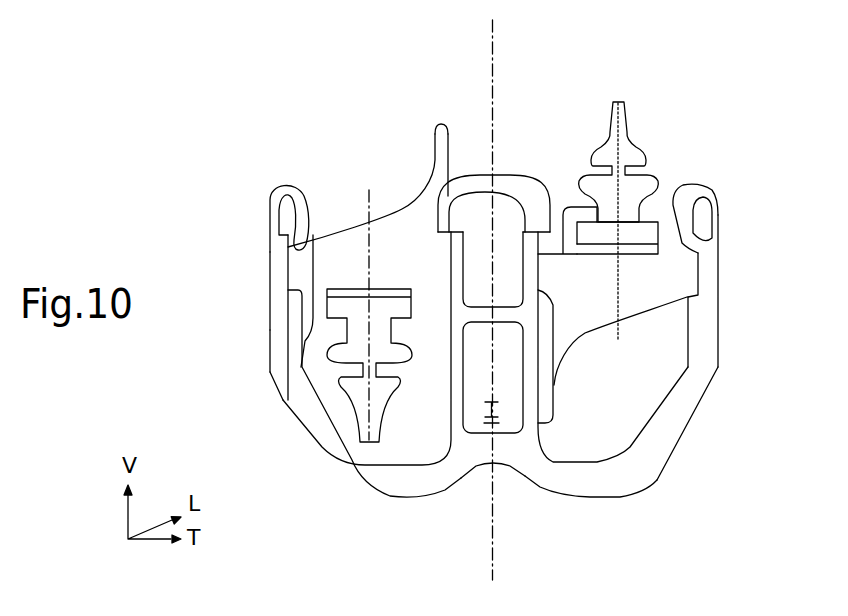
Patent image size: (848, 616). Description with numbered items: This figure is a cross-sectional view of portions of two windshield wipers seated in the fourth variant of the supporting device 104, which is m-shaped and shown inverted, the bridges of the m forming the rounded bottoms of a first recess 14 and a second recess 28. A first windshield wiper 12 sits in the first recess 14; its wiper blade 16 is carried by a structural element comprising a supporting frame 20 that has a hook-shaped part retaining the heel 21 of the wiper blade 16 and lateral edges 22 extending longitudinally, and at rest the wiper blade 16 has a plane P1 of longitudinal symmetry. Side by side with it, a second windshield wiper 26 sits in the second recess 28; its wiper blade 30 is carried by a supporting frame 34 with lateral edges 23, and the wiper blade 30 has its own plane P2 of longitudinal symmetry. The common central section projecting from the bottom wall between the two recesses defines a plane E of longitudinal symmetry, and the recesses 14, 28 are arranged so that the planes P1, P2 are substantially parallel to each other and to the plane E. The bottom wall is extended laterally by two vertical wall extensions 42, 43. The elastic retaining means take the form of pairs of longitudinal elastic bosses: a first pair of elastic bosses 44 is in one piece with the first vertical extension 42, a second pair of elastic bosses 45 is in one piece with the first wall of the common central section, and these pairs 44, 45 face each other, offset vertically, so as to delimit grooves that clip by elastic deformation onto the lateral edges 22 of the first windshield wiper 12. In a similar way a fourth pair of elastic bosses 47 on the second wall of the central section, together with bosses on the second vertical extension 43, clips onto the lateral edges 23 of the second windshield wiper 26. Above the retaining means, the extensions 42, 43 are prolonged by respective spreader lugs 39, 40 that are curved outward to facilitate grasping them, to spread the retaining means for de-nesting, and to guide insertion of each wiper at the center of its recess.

The supporting device 104 is at (700, 422).
The first windshield wiper 12 is at (428, 173).
The first recess 14 is at (403, 448).
The wiper blade 16 is at (323, 451).
The supporting frame 20 is at (440, 127).
The heel 21 is at (288, 396).
The lateral edges 22 is at (303, 272).
The lateral edges 23 is at (545, 262).
The second windshield wiper 26 is at (556, 363).
The second recess 28 is at (620, 450).
The wiper blade 30 is at (632, 158).
The supporting frame 34 is at (573, 325).
The spreader lug 39 is at (282, 185).
The spreader lug 40 is at (710, 196).
The first vertical wall extension 42 is at (283, 314).
The second vertical wall extension 43 is at (707, 280).
The first pair of elastic bosses 44 is at (275, 237).
The second pair of elastic bosses 45 is at (450, 298).
The fourth pair of elastic bosses 47 is at (538, 232).
The plane of longitudinal symmetry E is at (493, 55).
The plane of longitudinal symmetry P1 is at (368, 213).
The plane of longitudinal symmetry P2 is at (612, 135).